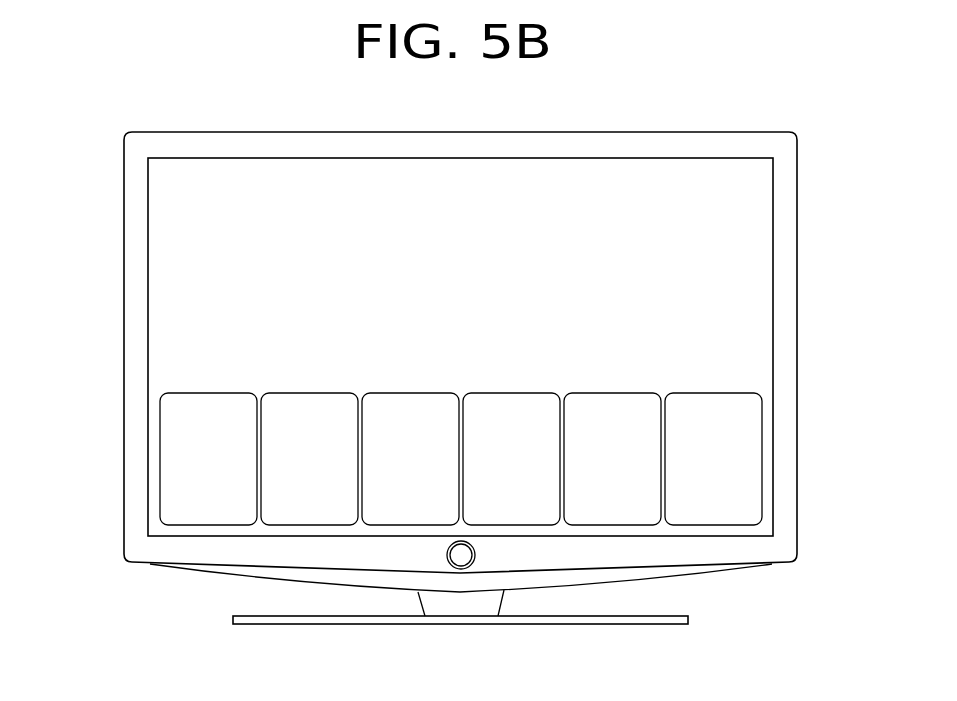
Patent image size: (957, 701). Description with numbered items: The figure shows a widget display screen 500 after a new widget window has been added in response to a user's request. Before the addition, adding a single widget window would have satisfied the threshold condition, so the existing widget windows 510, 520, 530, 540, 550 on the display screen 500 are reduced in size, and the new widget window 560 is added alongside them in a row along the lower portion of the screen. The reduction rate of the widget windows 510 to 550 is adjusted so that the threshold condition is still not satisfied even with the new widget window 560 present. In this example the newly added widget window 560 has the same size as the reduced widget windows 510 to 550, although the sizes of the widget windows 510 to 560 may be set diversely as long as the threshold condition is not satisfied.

The widget display screen 500 is at (714, 158).
The widget window 510 is at (163, 395).
The widget window 520 is at (326, 393).
The widget window 530 is at (426, 393).
The widget window 540 is at (525, 393).
The widget window 550 is at (627, 393).
The new widget window 560 is at (759, 395).